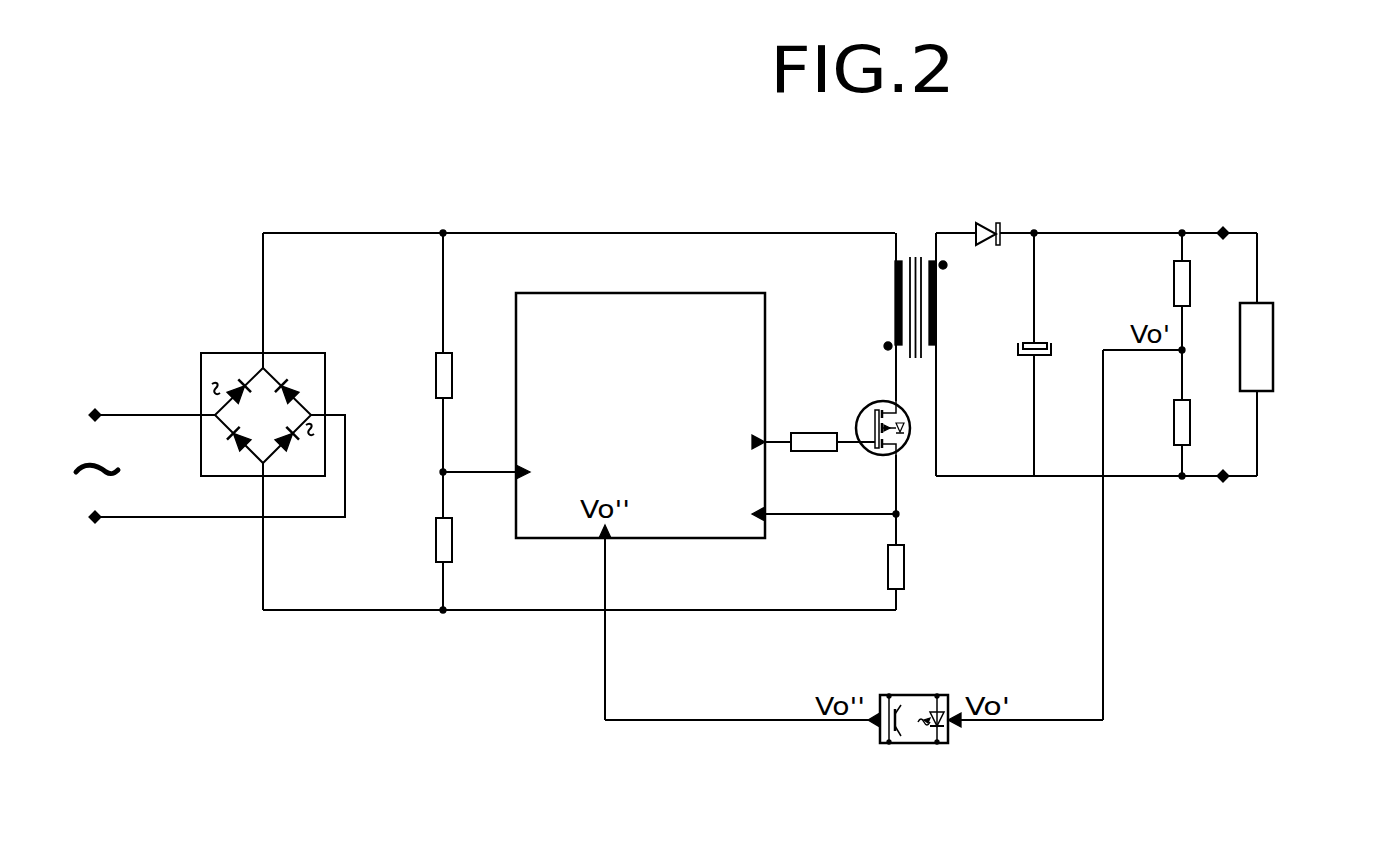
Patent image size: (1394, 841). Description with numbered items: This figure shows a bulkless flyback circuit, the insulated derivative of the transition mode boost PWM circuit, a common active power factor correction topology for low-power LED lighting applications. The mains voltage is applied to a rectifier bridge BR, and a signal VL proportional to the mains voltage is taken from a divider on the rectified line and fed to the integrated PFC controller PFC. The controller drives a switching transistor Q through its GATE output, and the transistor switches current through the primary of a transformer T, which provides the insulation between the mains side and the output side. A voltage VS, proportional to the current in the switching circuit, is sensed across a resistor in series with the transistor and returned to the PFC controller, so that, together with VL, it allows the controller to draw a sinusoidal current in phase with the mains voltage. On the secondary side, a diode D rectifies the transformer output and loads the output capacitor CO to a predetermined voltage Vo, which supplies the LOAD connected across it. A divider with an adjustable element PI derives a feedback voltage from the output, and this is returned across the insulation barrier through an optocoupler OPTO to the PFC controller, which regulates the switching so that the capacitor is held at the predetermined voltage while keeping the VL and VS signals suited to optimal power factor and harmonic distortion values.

The bridge rectifier BR is at (263, 414).
The mains voltage information signal VL is at (467, 421).
The integrated PFC controller PFC is at (640, 415).
The gate drive output GATE is at (770, 442).
The switching transistor Q is at (889, 389).
The switching current voltage signal VS is at (845, 554).
The optocoupler OPTO is at (917, 704).
The transformer T is at (915, 354).
The output diode D is at (1096, 217).
The capacitor CO is at (1051, 353).
The predetermined output voltage Vo is at (1220, 214).
The potentiometer adjustment PI is at (1170, 365).
The load LOAD is at (1306, 354).